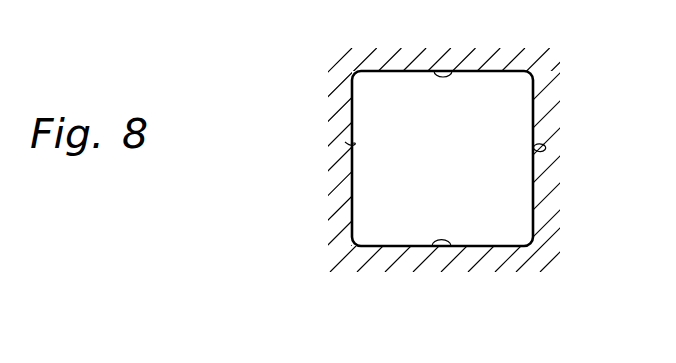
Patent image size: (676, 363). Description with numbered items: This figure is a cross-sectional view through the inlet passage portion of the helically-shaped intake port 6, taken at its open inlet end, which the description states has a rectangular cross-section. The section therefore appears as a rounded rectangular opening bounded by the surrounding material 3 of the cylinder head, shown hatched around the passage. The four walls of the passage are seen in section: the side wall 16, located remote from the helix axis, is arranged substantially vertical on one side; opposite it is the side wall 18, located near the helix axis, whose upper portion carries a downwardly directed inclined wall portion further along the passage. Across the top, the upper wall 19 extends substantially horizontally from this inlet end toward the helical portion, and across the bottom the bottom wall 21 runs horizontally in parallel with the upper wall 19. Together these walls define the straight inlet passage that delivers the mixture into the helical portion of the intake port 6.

The base body / block 3 is at (553, 70).
The helically-shaped intake port 6 is at (437, 167).
The side wall 16 is at (346, 142).
The side wall 18 is at (545, 146).
The upper wall 19 is at (441, 72).
The bottom wall 21 is at (447, 249).